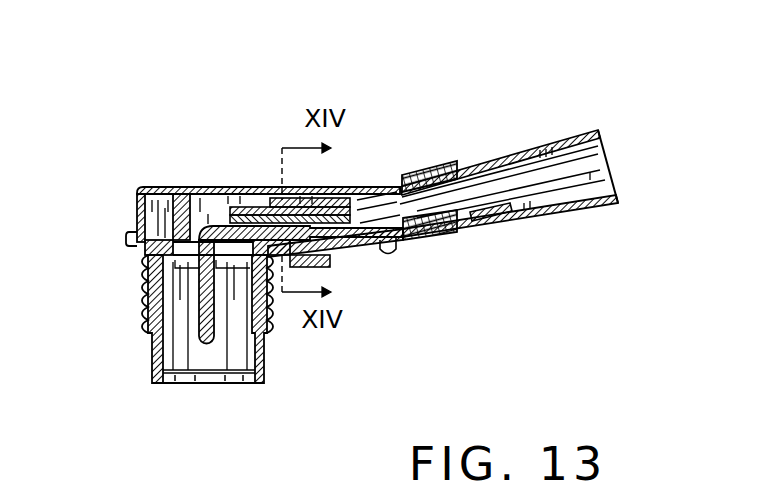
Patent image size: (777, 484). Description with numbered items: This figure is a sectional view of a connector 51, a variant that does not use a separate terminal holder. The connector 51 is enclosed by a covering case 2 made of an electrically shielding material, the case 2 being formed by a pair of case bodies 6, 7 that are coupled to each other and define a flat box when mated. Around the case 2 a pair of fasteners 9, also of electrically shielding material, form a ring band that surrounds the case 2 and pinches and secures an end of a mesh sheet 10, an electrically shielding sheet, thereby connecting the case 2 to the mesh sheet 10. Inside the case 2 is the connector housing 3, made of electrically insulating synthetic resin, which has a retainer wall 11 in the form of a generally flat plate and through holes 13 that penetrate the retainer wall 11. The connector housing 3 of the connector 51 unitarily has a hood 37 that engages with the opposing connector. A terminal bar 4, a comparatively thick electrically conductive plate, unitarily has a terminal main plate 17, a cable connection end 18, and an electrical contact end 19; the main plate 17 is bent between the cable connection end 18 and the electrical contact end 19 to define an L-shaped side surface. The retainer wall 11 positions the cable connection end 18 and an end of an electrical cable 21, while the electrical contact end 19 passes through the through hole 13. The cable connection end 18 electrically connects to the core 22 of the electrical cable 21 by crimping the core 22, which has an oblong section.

The covering case 2 is at (395, 50).
The connector housing 3 is at (130, 255).
The terminal bar 4 is at (247, 187).
The case body 6 is at (410, 178).
The case body 7 is at (387, 187).
The fastener 9 is at (440, 165).
The mesh sheet 10 is at (552, 138).
The retainer wall 11 is at (352, 260).
The through hole 13 is at (143, 292).
The terminal main plate 17 is at (265, 337).
The cable connection end 18 is at (283, 258).
The electrical contact end 19 is at (212, 345).
The electrical cable 21 is at (622, 154).
The core 22 is at (322, 187).
The hood 37 is at (265, 360).
The connector 51 is at (166, 152).